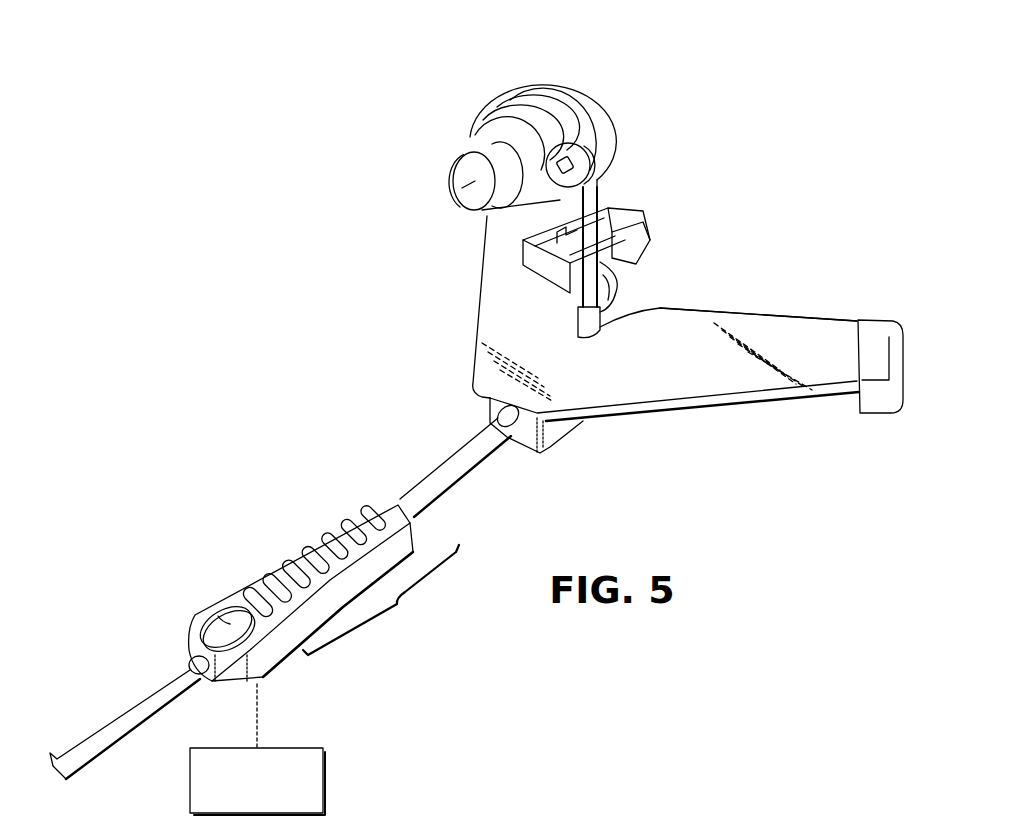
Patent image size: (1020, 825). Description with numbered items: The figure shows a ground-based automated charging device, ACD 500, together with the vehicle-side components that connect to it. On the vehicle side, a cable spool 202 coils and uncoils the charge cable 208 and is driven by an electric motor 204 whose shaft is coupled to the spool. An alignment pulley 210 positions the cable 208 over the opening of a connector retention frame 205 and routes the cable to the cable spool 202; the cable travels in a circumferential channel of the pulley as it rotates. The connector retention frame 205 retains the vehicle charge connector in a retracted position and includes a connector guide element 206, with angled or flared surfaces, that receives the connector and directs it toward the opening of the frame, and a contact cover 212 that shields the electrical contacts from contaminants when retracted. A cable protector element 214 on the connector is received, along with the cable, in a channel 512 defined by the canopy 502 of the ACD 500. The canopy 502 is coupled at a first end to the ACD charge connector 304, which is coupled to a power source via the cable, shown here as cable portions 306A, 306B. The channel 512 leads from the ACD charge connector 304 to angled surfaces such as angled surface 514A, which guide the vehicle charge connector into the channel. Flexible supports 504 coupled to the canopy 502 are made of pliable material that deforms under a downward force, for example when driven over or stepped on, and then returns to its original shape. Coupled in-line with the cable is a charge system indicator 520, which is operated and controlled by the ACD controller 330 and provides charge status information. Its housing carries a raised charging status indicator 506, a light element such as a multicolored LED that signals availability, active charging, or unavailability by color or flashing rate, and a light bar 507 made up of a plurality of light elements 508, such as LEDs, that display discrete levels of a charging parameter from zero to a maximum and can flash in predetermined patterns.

The automated charging device (ACD) 500 is at (766, 58).
The cable spool 202 is at (470, 133).
The electric motor 204 is at (455, 190).
The connector retention frame 205 is at (613, 200).
The connector guide element 206 is at (641, 236).
The charge cable 208 is at (640, 290).
The alignment pulley 210 is at (600, 158).
The contact cover 212 is at (543, 268).
The cable protector element 214 is at (577, 327).
The ACD charge connector 304 is at (556, 448).
The cable 306A is at (443, 466).
The cable 306B is at (135, 710).
The ACD controller 330 is at (243, 747).
The canopy 502 is at (793, 397).
The flexible support 504 is at (888, 320).
The charging status indicator 506 is at (205, 612).
The light bar 507 is at (397, 608).
The light elements 508 is at (372, 518).
The channel 512 is at (627, 300).
The angled surface 514A is at (790, 317).
The charge system indicator 520 is at (270, 672).